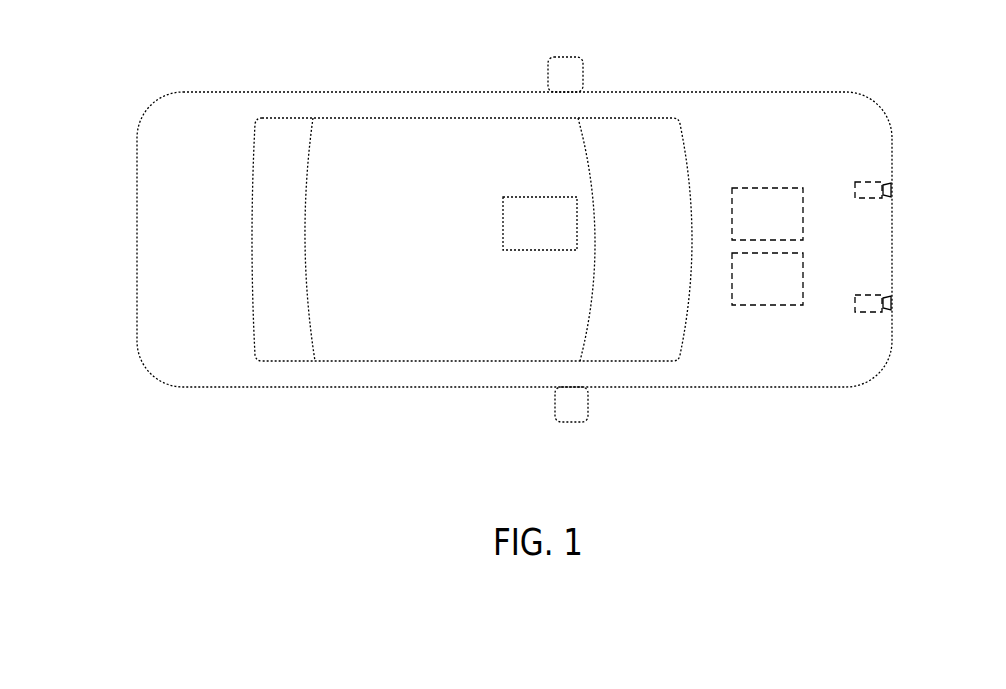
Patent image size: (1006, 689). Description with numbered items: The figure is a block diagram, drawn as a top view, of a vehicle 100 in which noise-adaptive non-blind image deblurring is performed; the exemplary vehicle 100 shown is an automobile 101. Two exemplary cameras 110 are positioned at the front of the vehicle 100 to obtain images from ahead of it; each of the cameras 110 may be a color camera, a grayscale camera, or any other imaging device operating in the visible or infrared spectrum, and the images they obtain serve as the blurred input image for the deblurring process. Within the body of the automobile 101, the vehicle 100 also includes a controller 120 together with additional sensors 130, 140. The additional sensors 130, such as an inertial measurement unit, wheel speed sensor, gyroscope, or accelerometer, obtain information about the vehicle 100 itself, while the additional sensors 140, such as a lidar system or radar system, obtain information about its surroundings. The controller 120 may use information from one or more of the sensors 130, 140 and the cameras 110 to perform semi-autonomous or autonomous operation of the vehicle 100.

The vehicle 100 is at (217, 92).
The automobile 101 is at (514, 239).
The cameras 110 is at (868, 201).
The controller 120 is at (790, 228).
The additional sensors 130 is at (562, 238).
The additional sensors 140 is at (790, 295).